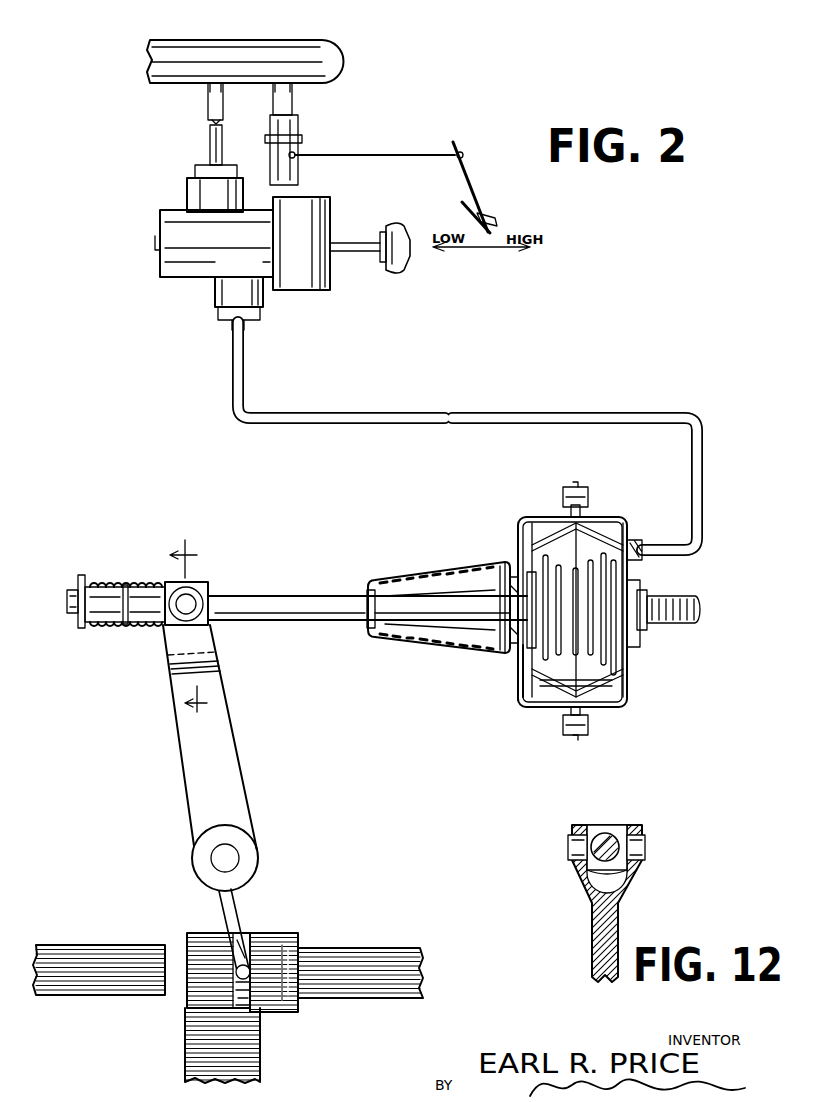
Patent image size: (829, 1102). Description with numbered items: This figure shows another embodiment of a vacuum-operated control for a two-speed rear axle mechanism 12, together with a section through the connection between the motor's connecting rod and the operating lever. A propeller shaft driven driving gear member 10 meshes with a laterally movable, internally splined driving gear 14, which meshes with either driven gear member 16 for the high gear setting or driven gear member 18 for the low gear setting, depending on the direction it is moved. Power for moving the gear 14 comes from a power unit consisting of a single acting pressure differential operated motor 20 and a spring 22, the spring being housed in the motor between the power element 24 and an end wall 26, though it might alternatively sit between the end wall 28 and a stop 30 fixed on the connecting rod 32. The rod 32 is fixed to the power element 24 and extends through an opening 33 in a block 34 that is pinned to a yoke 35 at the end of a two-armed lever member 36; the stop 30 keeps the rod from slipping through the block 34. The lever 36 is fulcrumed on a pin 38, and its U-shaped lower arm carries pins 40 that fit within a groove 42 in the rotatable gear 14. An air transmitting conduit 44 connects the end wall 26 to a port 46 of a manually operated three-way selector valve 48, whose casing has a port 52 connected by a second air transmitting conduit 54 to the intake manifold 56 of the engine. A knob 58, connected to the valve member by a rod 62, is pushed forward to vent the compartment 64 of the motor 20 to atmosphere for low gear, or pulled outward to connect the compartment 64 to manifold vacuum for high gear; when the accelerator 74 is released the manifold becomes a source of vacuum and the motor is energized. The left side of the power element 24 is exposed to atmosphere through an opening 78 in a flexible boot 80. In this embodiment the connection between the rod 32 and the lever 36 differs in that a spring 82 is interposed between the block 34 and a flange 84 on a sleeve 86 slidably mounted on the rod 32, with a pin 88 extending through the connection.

In FIG. 2, the driving gear member 10 is at (250, 1058).
In FIG. 2, the two-speed rear axle mechanism 12 is at (302, 935).
In FIG. 2, the driving gear 14 is at (198, 940).
In FIG. 2, the driven gear member 16 is at (100, 958).
In FIG. 2, the driven gear member 18 is at (367, 963).
In FIG. 2, the pressure differential operated motor 20 is at (525, 527).
In FIG. 2, the spring 22 is at (615, 660).
In FIG. 2, the power element 24 is at (530, 672).
In FIG. 2, the end wall 26 is at (628, 690).
In FIG. 2, the end wall 28 is at (522, 695).
In FIG. 2, the stop 30 is at (213, 597).
In FIG. 2, the connecting rod 32 is at (308, 596).
In FIG. 12, the opening 33 is at (613, 838).
In FIG. 2, the block 34 is at (205, 585).
In FIG. 12, the block 34 is at (595, 830).
In FIG. 12, the yoke 35 is at (570, 865).
In FIG. 2, the lever member 36 is at (220, 737).
In FIG. 2, the pin 38 is at (230, 860).
In FIG. 2, the pins 40 is at (236, 975).
In FIG. 2, the groove 42 is at (252, 945).
In FIG. 2, the air transmitting conduit 44 is at (380, 418).
In FIG. 2, the port 46 is at (258, 297).
In FIG. 2, the three-way selector valve 48 is at (205, 282).
In FIG. 2, the port 52 is at (202, 190).
In FIG. 2, the air transmitting conduit 54 is at (212, 138).
In FIG. 2, the intake manifold 56 is at (328, 57).
In FIG. 2, the knob 58 is at (412, 258).
In FIG. 2, the rod 62 is at (357, 240).
In FIG. 2, the compartment 64 is at (597, 532).
In FIG. 2, the accelerator 74 is at (460, 160).
In FIG. 2, the opening 78 is at (430, 578).
In FIG. 2, the flexible boot 80 is at (430, 642).
In FIG. 2, the spring 82 is at (142, 583).
In FIG. 2, the flange 84 is at (82, 630).
In FIG. 2, the sleeve 86 is at (117, 612).
In FIG. 2, the pin 88 is at (70, 616).